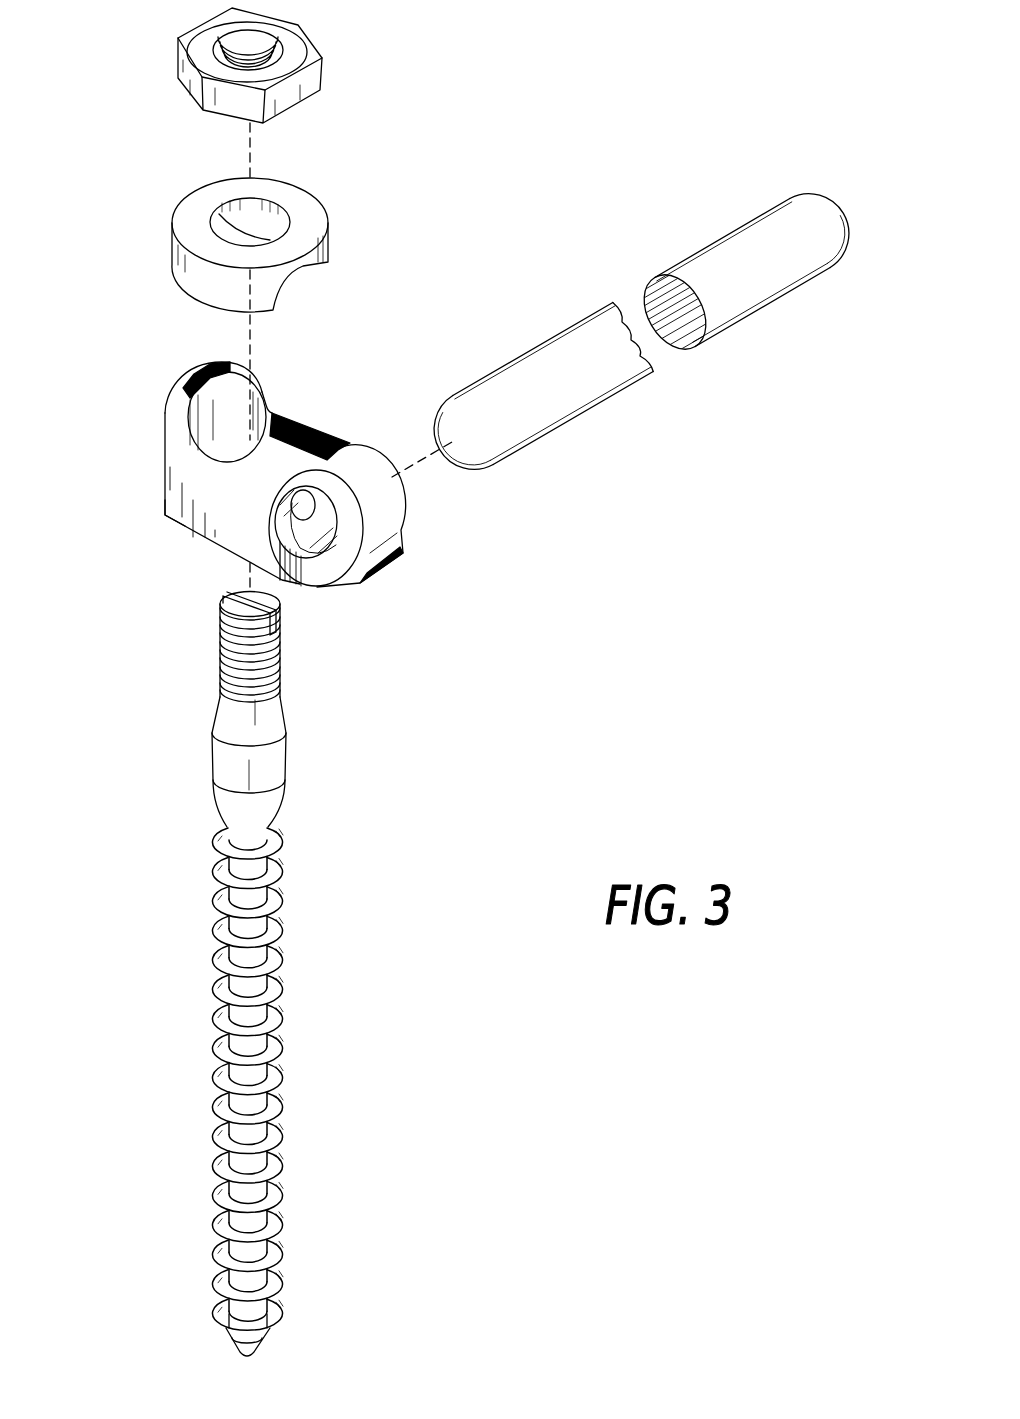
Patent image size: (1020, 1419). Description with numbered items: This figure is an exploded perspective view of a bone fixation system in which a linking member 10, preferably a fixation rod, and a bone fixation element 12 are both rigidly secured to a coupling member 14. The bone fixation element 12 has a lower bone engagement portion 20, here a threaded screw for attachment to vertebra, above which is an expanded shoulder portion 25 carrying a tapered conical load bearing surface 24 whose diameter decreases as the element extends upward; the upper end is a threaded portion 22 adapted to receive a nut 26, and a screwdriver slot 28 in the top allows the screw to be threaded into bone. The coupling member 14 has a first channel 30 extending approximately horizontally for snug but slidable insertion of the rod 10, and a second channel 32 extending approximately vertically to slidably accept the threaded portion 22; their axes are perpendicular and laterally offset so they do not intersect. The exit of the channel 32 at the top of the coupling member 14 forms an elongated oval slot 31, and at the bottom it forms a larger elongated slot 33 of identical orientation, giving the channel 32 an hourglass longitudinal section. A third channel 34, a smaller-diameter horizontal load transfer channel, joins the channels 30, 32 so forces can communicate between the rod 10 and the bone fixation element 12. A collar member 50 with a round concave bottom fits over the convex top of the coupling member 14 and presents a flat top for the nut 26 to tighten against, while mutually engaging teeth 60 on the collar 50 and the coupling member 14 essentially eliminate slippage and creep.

The linking member 10 is at (575, 388).
The bone fixation element 12 is at (298, 868).
The coupling member 14 is at (192, 473).
The bone engagement portion 20 is at (220, 1053).
The threaded portion 22 is at (220, 660).
The load bearing surface 24 is at (273, 713).
The expanded shoulder portion 25 is at (192, 683).
The nut 26 is at (313, 85).
The screwdriver slot 28 is at (240, 593).
The first channel 30 is at (403, 552).
The oval slot 31 is at (188, 428).
The second channel 32 is at (263, 412).
The elongated slot 33 is at (170, 515).
The third channel 34 is at (327, 587).
The collar member 50 is at (317, 213).
The teeth 60 is at (207, 368).